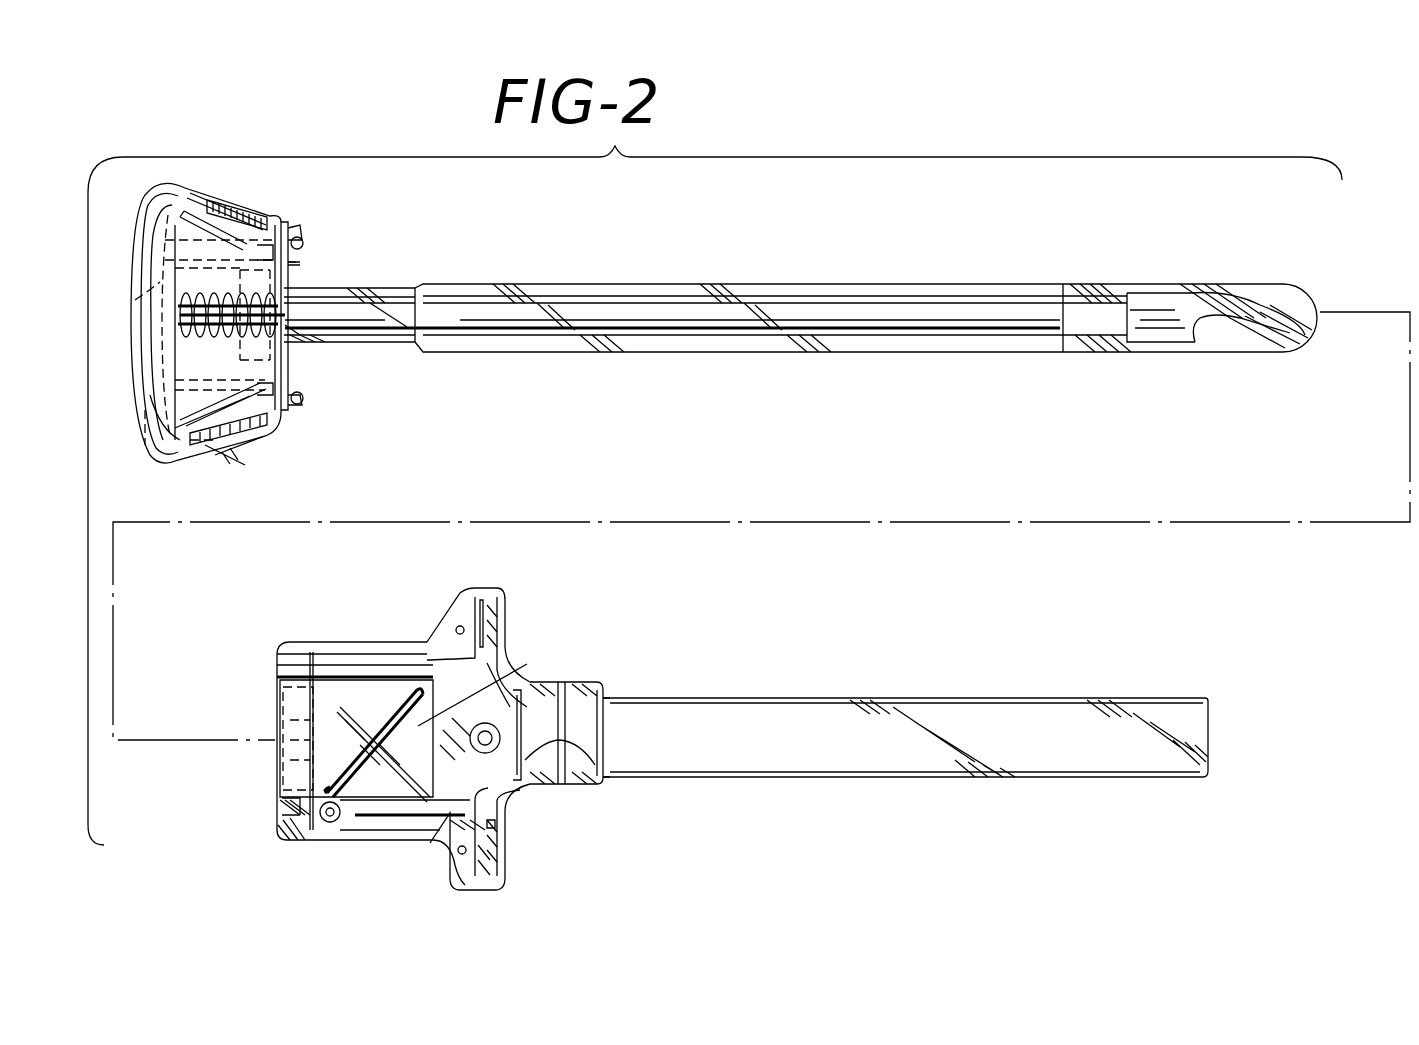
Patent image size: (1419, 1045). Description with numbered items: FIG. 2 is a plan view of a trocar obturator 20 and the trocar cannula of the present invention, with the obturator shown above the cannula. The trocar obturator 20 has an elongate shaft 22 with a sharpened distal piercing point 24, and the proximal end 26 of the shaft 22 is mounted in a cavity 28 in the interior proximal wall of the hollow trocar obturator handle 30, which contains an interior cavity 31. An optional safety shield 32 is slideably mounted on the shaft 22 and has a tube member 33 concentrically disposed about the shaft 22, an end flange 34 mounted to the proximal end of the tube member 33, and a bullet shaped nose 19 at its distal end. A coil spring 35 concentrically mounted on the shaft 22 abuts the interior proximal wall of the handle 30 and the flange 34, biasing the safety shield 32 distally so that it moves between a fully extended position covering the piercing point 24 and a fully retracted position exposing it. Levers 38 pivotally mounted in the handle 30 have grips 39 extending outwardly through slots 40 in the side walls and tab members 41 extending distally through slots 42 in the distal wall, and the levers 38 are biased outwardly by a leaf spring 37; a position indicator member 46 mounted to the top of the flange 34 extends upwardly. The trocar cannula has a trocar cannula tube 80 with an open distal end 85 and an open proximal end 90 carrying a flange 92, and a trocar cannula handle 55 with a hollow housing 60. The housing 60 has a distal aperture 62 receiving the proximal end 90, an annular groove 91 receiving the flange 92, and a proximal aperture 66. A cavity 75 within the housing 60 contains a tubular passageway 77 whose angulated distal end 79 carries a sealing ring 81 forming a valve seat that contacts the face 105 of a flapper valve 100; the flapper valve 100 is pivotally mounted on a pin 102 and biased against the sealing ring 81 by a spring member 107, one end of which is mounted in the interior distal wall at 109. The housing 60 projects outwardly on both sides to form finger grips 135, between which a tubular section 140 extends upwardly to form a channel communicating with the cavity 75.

The bullet shaped nose 19 is at (1298, 288).
The trocar obturator 20 is at (546, 380).
The elongate shaft 22 is at (785, 284).
The sharpened distal piercing point 24 is at (1235, 332).
The proximal end of shaft 26 is at (147, 307).
The cavity 28 is at (157, 337).
The trocar obturator handle 30 is at (160, 465).
The interior cavity 31 is at (253, 450).
The safety shield 32 is at (1006, 288).
The tube member 33 is at (587, 284).
The end flange 34 is at (293, 287).
The coil spring 35 is at (140, 427).
The leaf spring 37 is at (140, 247).
The levers 38 is at (180, 215).
The grips 39 is at (267, 215).
The slots 40 is at (195, 222).
The tab members 41 is at (293, 232).
The slots 42 is at (300, 240).
The position indicator member 46 is at (313, 347).
The trocar cannula handle 55 is at (268, 638).
The housing 60 is at (278, 840).
The distal aperture 62 is at (603, 702).
The proximal aperture 66 is at (280, 743).
The cavity 75 is at (515, 680).
The tubular passageway 77 is at (318, 690).
The distal end of tubular passageway 79 is at (387, 693).
The trocar cannula tube 80 is at (1062, 703).
The sealing ring 81 is at (403, 680).
The open distal end 85 is at (1210, 701).
The open proximal end 90 is at (557, 720).
The annular groove 91 is at (557, 777).
The flange 92 is at (607, 777).
The flapper valve 100 is at (353, 820).
The pin 102 is at (280, 807).
The face of flapper valve 105 is at (517, 642).
The spring member 107 is at (408, 830).
The mounting location of spring member 109 is at (493, 827).
The finger grips 135 is at (488, 588).
The tubular section 140 is at (445, 873).